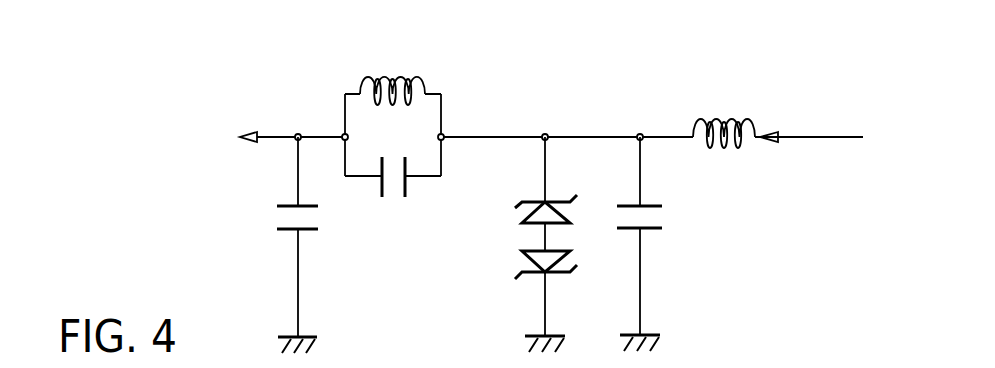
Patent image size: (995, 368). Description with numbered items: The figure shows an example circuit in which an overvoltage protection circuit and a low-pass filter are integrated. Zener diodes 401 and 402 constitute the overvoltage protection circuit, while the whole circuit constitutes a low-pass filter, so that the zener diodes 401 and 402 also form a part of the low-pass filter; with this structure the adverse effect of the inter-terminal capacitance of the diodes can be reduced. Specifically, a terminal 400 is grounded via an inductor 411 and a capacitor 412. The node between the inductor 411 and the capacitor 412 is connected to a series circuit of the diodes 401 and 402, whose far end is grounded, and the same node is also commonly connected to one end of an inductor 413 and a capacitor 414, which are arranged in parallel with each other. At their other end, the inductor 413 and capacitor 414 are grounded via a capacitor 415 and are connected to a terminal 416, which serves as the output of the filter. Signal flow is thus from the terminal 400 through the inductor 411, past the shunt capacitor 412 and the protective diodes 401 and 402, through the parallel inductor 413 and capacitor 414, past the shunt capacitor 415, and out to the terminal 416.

The terminal 400 is at (835, 135).
The zener diode 401 is at (513, 218).
The zener diode 402 is at (513, 265).
The inductor 411 is at (728, 115).
The capacitor 412 is at (665, 217).
The inductor 413 is at (407, 73).
The capacitor 414 is at (377, 193).
The capacitor 415 is at (272, 216).
The terminal 416 is at (247, 123).